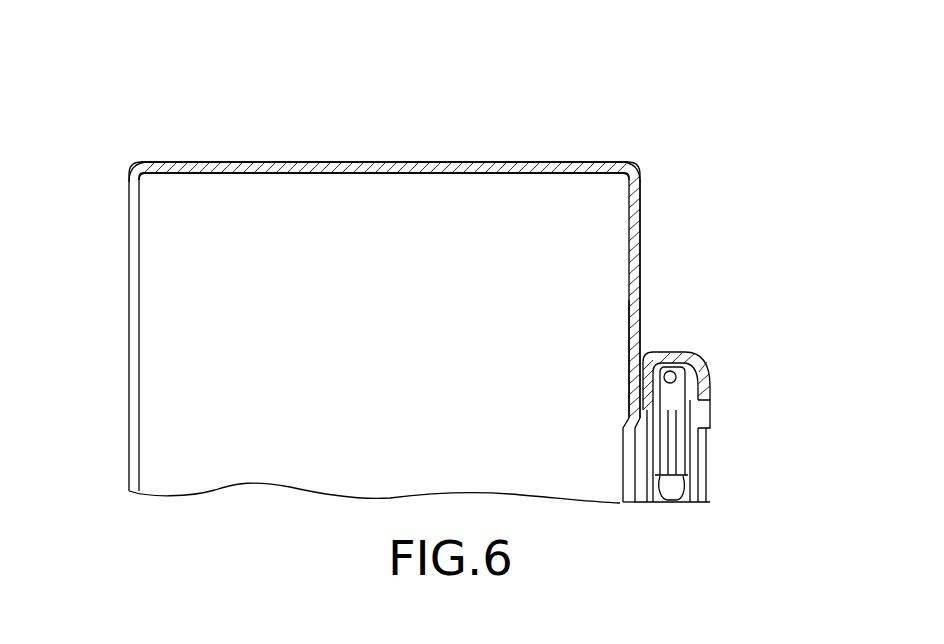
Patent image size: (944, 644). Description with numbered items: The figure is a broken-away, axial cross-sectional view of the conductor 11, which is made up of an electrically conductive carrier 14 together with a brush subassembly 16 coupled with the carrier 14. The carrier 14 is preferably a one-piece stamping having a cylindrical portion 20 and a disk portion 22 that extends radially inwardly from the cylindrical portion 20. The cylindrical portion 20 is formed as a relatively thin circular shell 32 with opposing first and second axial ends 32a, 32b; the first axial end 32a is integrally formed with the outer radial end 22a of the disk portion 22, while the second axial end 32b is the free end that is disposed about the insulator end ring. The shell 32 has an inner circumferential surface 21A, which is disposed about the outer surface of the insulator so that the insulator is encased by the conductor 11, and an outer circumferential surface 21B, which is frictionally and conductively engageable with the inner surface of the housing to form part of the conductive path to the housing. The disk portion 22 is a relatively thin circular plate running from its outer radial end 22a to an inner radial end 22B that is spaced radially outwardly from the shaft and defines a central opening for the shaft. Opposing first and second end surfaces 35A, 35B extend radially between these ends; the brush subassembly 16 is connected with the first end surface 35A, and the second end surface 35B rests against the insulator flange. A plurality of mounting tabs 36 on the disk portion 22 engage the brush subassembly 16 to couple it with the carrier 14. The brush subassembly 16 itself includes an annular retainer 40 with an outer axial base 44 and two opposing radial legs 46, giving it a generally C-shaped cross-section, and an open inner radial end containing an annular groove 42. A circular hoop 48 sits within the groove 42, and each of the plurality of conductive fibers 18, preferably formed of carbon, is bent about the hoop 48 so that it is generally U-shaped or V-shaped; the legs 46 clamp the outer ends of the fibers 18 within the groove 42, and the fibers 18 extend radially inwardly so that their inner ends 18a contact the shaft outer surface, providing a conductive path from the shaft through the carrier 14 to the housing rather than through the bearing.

The conductor 11 is at (623, 97).
The electrically conductive carrier 14 is at (218, 127).
The brush subassembly 16 is at (762, 430).
The conductive fibers 18 is at (655, 447).
The inner end of conductive fiber 18a is at (672, 492).
The cylindrical portion 20 is at (372, 137).
The inner circumferential surface 21A is at (306, 177).
The outer circumferential surface 21B is at (275, 160).
The disk portion 22 is at (688, 273).
The outer radial end of disk portion 22a is at (642, 182).
The inner radial end of disk portion 22B is at (620, 425).
The circular shell 32 is at (453, 160).
The first axial end of shell 32a is at (630, 167).
The second axial end of shell 32b is at (130, 164).
The first end surface 35A is at (641, 232).
The second end surface 35B is at (629, 243).
The mounting tab 36 is at (708, 388).
The annular retainer 40 is at (683, 342).
The annular groove 42 is at (672, 402).
The outer axial base 44 is at (667, 354).
The radial legs 46 is at (656, 385).
The circular hoop 48 is at (678, 368).